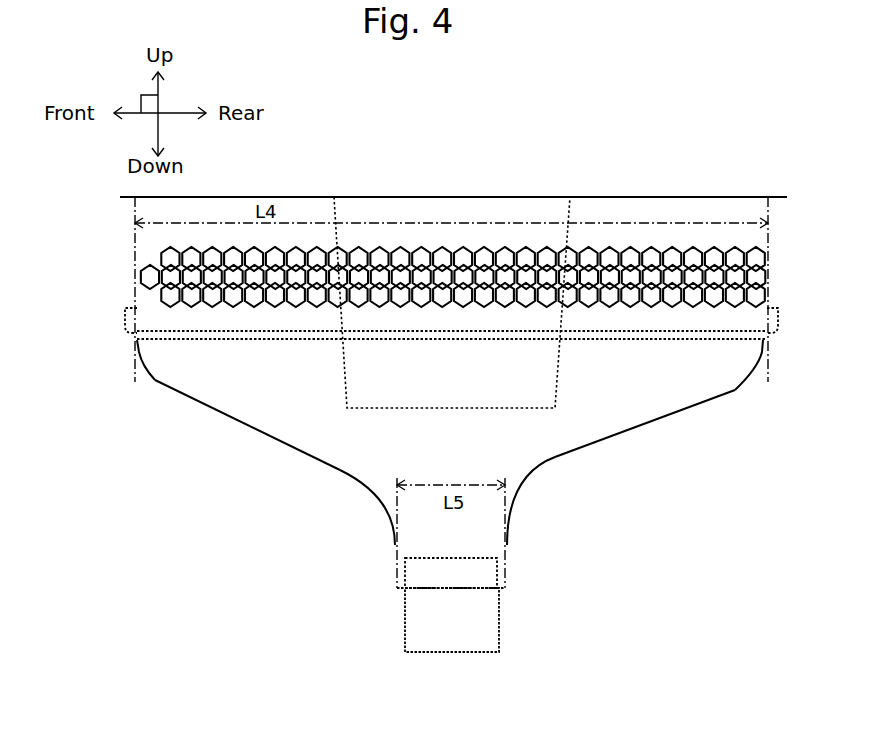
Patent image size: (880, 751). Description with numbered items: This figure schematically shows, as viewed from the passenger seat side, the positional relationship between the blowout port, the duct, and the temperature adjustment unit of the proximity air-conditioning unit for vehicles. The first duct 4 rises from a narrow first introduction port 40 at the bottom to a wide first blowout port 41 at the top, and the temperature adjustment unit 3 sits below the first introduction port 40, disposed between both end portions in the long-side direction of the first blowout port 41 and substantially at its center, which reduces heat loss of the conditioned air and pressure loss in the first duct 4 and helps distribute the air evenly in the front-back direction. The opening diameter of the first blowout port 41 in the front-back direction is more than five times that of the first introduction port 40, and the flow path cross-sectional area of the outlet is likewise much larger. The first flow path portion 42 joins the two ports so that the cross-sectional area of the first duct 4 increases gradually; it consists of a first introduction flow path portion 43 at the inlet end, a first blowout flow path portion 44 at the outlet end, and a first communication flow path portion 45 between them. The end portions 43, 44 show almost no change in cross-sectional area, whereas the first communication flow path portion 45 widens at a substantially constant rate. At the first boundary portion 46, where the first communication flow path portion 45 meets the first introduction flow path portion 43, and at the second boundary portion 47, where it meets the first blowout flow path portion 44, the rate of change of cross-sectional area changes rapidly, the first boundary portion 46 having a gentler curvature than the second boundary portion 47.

The temperature adjustment unit 3 is at (500, 612).
The first duct 4 is at (435, 442).
The first introduction port 40 is at (456, 590).
The first blowout port 41 is at (652, 340).
The first flow path portion 42 is at (635, 432).
The first introduction flow path portion 43 is at (507, 565).
The first blowout flow path portion 44 is at (137, 351).
The first communication flow path portion 45 is at (227, 413).
The first boundary portion 46 is at (376, 490).
The second boundary portion 47 is at (155, 381).